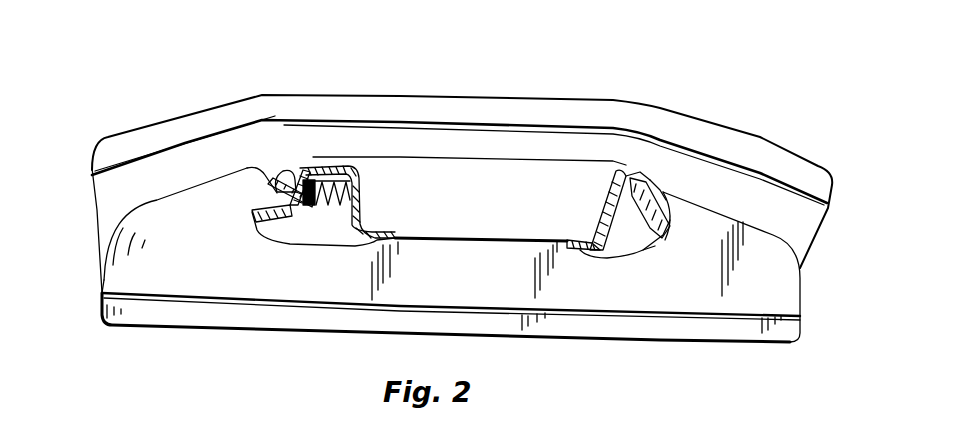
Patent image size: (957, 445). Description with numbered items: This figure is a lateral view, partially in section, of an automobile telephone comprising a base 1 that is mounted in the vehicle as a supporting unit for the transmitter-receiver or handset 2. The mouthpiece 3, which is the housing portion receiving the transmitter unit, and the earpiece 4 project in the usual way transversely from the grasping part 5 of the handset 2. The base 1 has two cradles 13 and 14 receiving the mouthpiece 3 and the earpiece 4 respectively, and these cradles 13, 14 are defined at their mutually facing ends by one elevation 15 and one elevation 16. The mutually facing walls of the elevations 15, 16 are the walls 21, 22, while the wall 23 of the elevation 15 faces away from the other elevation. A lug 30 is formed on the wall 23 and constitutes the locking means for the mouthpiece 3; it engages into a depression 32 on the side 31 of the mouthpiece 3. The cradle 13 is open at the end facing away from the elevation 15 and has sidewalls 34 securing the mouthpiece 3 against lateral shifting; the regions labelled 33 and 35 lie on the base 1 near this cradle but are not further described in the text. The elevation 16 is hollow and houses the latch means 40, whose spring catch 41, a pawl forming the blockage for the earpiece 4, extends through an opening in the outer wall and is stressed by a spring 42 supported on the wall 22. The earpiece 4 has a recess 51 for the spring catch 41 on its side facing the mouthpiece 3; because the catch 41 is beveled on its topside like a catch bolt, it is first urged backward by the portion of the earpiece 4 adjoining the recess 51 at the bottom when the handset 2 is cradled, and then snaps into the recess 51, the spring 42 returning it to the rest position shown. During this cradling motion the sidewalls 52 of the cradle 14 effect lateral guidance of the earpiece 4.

The base 1 is at (500, 328).
The transmitter-receiver (handset) 2 is at (462, 92).
The mouthpiece 3 is at (733, 183).
The earpiece 4 is at (208, 160).
The grasping part 5 is at (420, 103).
The cradle 13 is at (715, 240).
The cradle 14 is at (165, 243).
The elevation 15 is at (616, 185).
The elevation 16 is at (320, 163).
The wall 21 is at (606, 213).
The wall 22 is at (363, 178).
The wall 23 is at (668, 198).
The lug 30 is at (663, 195).
The side 31 is at (634, 180).
The depression 32 is at (638, 178).
The base corner wall 33 is at (787, 267).
The sidewalls 34 is at (703, 210).
The base ledge 35 is at (660, 232).
The latch means 40 is at (335, 220).
The spring catch (pawl) 41 is at (295, 195).
The spring 42 is at (327, 200).
The recess 51 is at (280, 173).
The sidewalls 52 is at (222, 200).